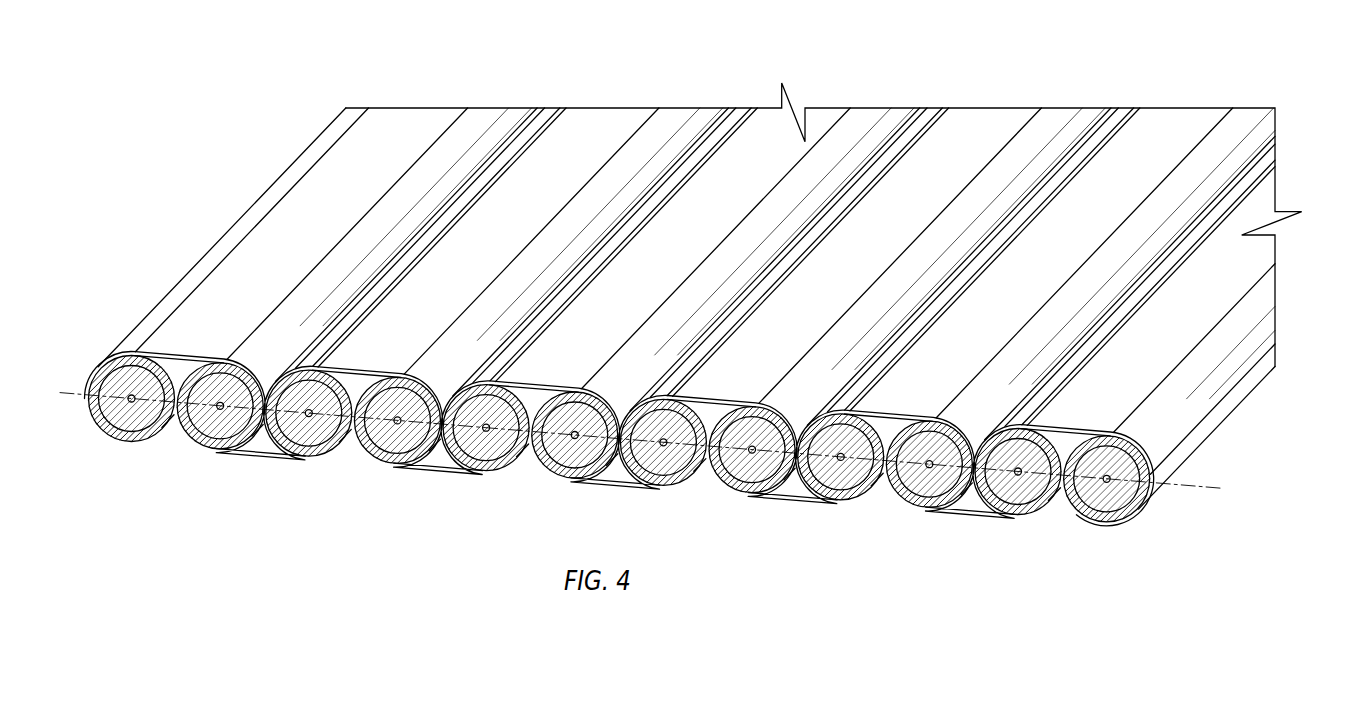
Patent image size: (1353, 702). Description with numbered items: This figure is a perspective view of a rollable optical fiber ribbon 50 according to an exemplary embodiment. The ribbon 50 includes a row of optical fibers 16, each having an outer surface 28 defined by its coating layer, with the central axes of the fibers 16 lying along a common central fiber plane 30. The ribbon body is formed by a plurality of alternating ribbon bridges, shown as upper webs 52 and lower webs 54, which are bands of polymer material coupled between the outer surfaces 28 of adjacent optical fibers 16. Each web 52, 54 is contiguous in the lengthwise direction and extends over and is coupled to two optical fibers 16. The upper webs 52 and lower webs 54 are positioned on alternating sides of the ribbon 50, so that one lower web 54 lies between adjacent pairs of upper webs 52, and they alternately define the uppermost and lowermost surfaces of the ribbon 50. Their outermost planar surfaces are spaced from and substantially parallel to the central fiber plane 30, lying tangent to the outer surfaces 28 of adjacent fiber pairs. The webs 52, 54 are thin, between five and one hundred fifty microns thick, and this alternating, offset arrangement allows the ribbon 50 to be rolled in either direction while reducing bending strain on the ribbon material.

The rollable optical fiber ribbon 50 is at (193, 144).
The upper web 52 is at (217, 320).
The optical fiber 16 is at (123, 420).
The outer surface 28 is at (156, 446).
The lower web 54 is at (258, 456).
The central fiber plane 30 is at (1183, 487).